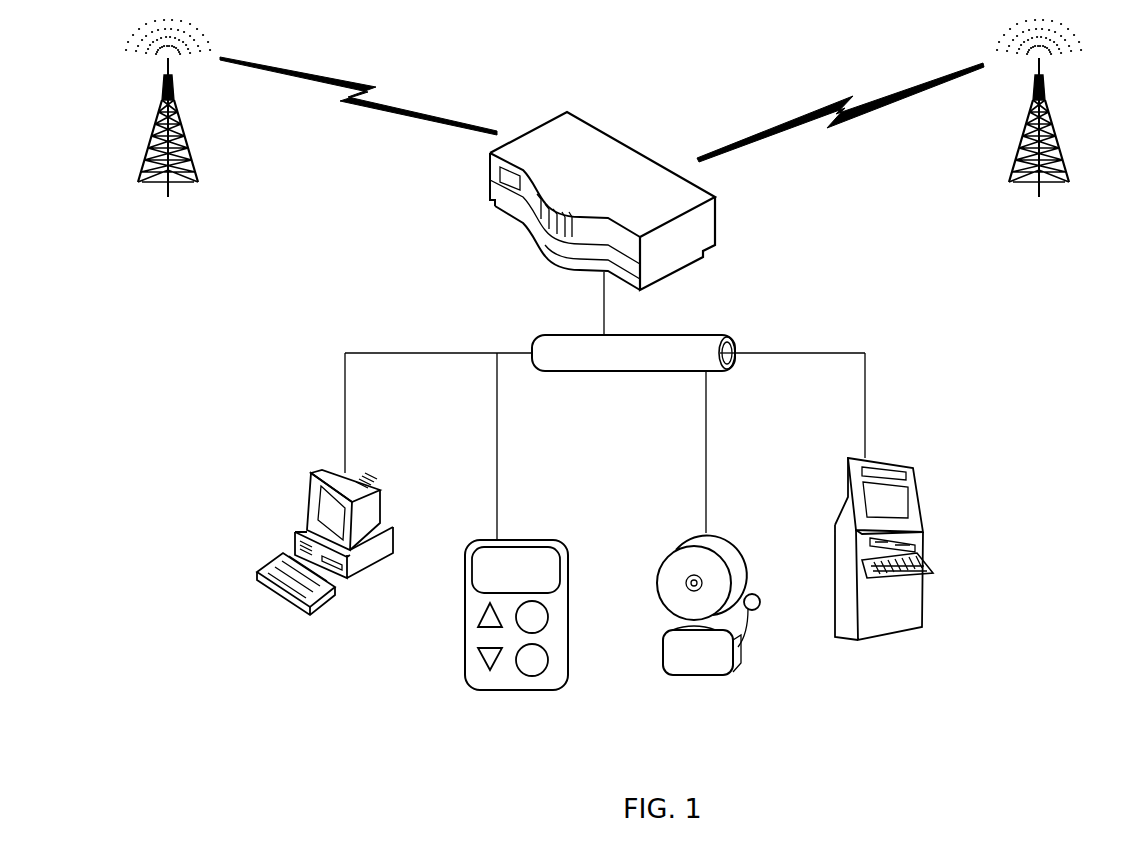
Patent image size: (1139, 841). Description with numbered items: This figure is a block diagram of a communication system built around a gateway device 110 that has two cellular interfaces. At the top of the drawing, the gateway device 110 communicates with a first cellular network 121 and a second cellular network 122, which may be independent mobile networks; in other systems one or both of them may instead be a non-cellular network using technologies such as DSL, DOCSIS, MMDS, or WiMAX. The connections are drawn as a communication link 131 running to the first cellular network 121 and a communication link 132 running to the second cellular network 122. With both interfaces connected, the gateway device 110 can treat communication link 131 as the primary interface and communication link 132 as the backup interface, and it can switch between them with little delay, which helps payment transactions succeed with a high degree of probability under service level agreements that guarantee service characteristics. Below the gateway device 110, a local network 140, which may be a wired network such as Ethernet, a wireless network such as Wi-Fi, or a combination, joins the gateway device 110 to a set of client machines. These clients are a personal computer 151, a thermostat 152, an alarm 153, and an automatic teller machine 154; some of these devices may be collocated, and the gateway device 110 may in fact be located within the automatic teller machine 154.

The gateway device 110 is at (717, 210).
The first cellular network 121 is at (147, 155).
The second cellular network 122 is at (1058, 138).
The communication link 131 is at (353, 85).
The communication link 132 is at (830, 107).
The local network 140 is at (707, 335).
The personal computer 151 is at (360, 480).
The thermostat 152 is at (528, 540).
The alarm 153 is at (692, 538).
The automatic teller machine (ATM) 154 is at (842, 512).